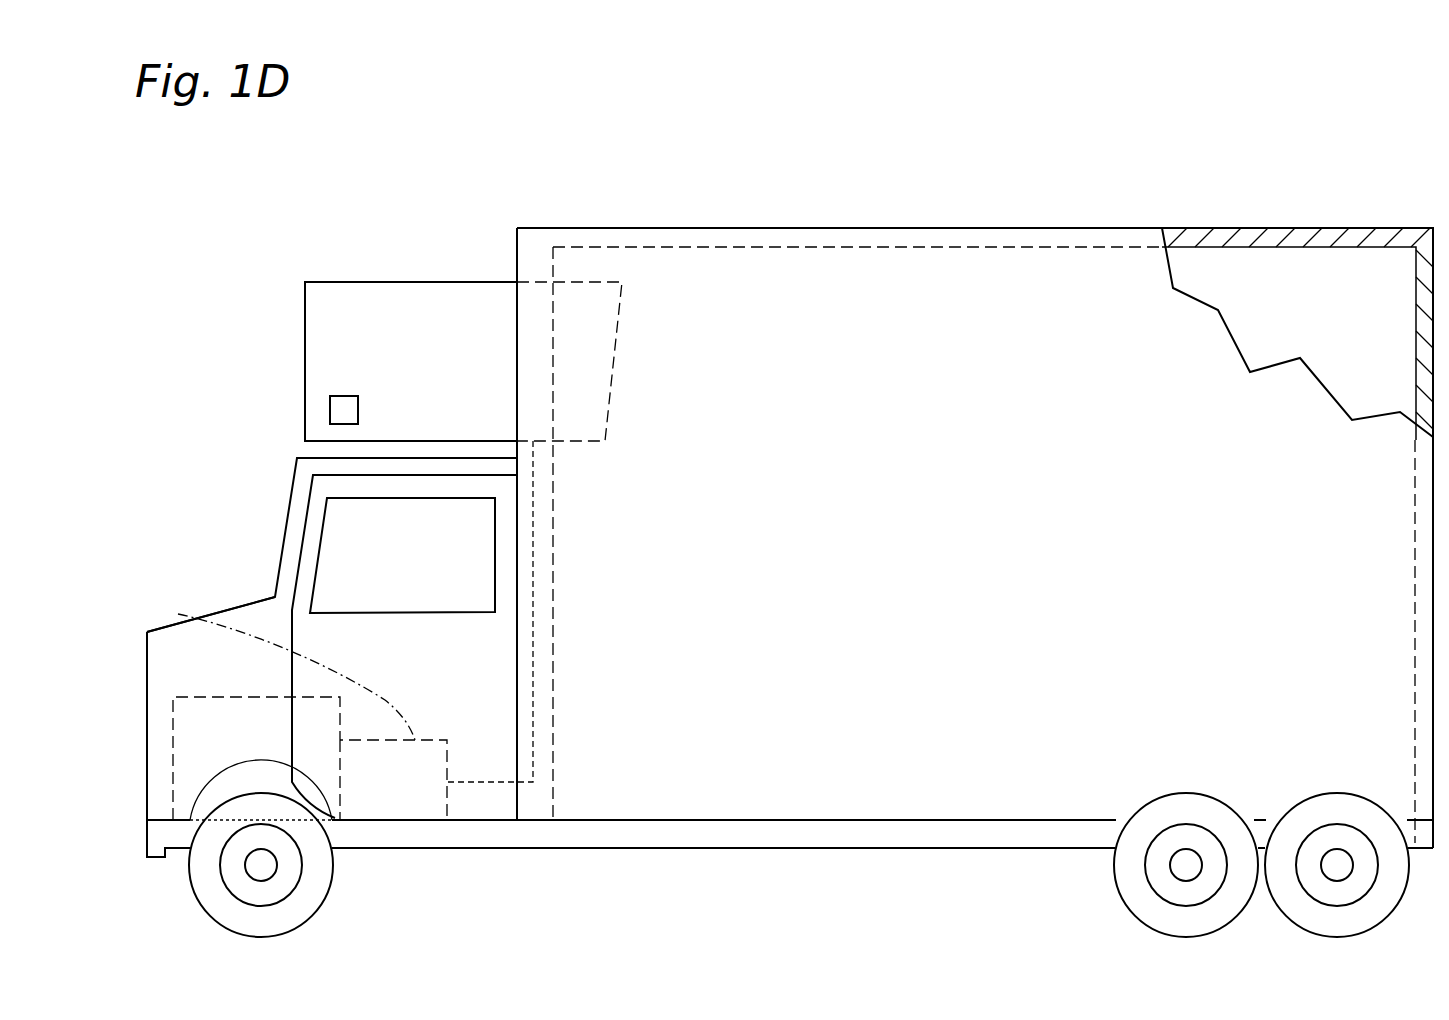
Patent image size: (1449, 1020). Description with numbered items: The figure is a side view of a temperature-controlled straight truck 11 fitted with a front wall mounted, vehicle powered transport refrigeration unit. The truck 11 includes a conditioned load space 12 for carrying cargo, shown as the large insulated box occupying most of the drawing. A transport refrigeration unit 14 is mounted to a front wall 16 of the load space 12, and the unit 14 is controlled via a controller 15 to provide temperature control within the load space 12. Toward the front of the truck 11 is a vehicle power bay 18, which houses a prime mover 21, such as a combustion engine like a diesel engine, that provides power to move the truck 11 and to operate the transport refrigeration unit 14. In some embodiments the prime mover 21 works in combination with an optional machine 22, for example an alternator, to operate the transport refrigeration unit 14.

The temperature-controlled straight truck 11 is at (1040, 188).
The conditioned load space 12 is at (1244, 280).
The transport refrigeration unit 14 is at (383, 282).
The controller 15 is at (330, 408).
The front wall 16 is at (558, 300).
The vehicle power bay 18 is at (238, 607).
The prime mover 21 is at (200, 697).
The machine 22 is at (178, 614).